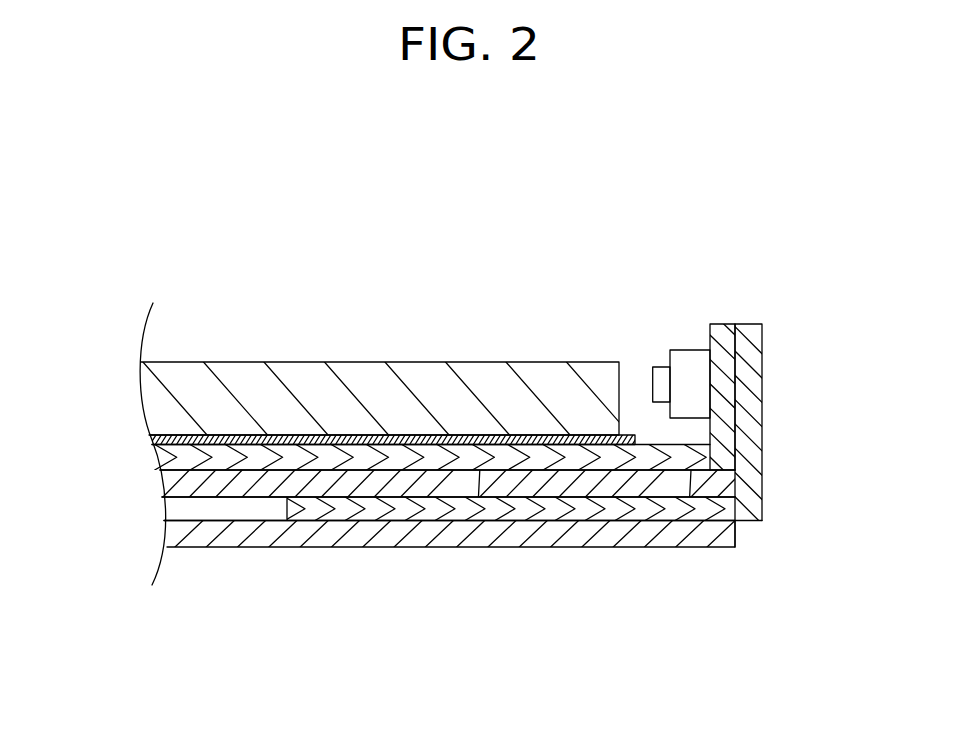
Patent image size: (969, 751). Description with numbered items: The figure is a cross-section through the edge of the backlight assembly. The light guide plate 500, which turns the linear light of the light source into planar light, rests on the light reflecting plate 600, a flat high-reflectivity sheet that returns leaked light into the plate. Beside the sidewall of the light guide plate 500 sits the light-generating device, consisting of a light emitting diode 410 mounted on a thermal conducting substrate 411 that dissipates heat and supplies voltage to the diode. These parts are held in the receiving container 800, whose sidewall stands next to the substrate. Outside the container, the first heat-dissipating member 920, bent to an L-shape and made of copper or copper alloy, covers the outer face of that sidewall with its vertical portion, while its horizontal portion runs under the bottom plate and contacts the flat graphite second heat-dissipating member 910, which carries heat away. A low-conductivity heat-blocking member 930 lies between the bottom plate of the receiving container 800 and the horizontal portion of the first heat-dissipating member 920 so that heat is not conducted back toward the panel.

The light guide plate 500 is at (302, 362).
The light reflecting plate 600 is at (152, 440).
The light emitting diode 410 is at (662, 367).
The thermal conducting substrate 411 is at (693, 351).
The receiving container 800 is at (723, 370).
The second heat-dissipating member 910 is at (732, 537).
The first heat-dissipating member 920 is at (752, 442).
The heat-blocking member 930 is at (723, 485).